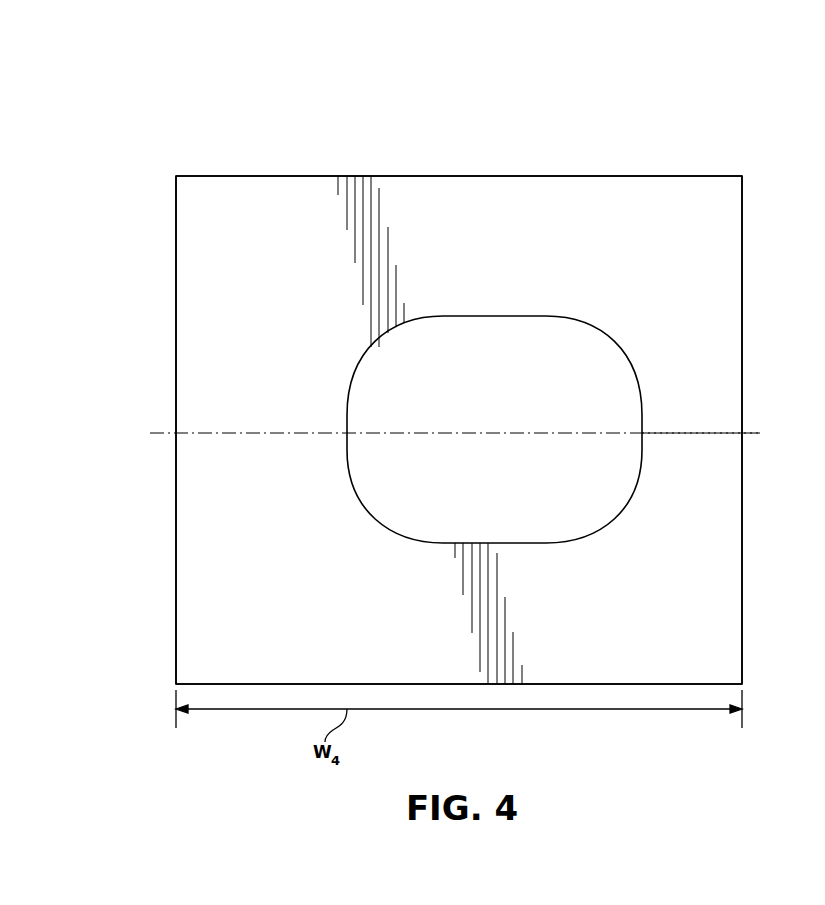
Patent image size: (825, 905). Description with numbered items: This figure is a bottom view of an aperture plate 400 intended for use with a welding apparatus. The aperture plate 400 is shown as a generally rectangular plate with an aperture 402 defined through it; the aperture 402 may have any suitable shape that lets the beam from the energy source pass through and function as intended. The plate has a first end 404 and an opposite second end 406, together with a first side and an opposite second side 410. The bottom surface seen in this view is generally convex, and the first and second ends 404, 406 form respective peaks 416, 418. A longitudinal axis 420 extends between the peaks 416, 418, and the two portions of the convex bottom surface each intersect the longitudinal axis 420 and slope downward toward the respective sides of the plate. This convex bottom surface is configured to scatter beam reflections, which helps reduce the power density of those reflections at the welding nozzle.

The aperture plate 400 is at (656, 60).
The aperture 402 is at (468, 316).
The first end 404 is at (176, 318).
The second end 406 is at (742, 294).
The second side 410 is at (612, 176).
The peak 416 is at (176, 433).
The peak 418 is at (742, 433).
The longitudinal axis 420 is at (683, 433).